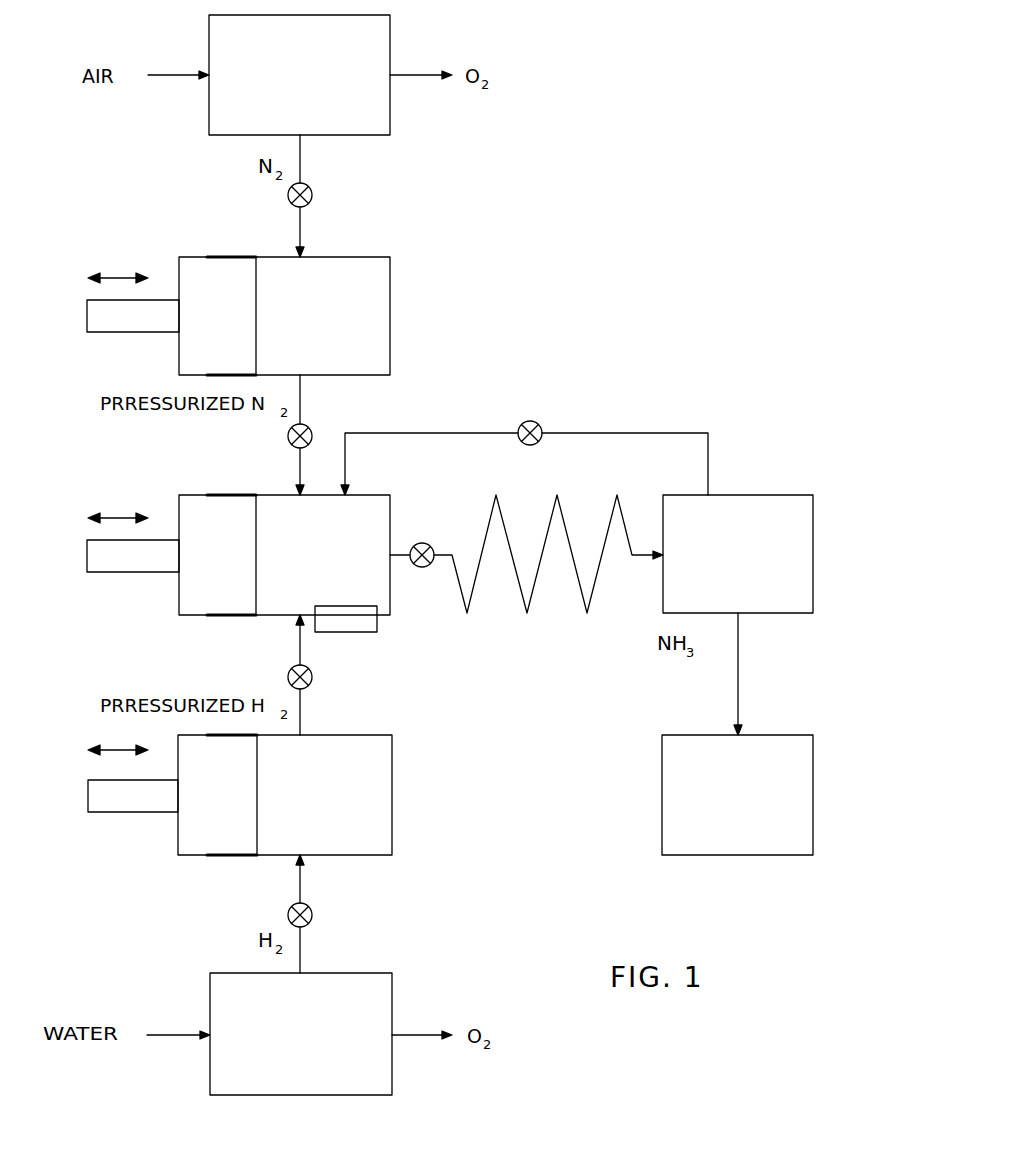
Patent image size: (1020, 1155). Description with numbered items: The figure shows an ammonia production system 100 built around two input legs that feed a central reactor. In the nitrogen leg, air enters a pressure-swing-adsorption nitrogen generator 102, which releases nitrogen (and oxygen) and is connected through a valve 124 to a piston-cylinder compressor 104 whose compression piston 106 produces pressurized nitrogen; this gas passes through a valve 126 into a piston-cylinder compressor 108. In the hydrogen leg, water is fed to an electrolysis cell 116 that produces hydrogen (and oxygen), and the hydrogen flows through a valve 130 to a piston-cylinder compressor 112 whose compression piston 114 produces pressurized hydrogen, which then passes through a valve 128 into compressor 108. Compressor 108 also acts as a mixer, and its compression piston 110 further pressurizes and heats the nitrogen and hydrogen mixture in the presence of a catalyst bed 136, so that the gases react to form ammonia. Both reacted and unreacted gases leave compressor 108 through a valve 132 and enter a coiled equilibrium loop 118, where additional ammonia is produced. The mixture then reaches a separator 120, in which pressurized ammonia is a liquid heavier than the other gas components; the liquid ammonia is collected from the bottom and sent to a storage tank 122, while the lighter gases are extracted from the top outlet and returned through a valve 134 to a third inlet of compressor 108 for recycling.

The ammonia production system 100 is at (642, 139).
The pressure-swing-adsorption (PSA) nitrogen generator 102 is at (360, 60).
The piston-cylinder compressor 104 is at (352, 272).
The compression piston 106 is at (193, 285).
The piston-cylinder compressor 108 is at (352, 508).
The compression piston 110 is at (195, 600).
The piston-cylinder compressor 112 is at (368, 820).
The compression piston 114 is at (195, 825).
The electrolysis cell 116 is at (360, 988).
The coiled equilibrium loop 118 is at (533, 590).
The separator 120 is at (758, 517).
The storage tank 122 is at (759, 763).
The valve 124 is at (310, 190).
The valve 126 is at (288, 440).
The valve 128 is at (290, 680).
The valve 130 is at (312, 908).
The valve 132 is at (427, 570).
The valve 134 is at (533, 421).
The catalyst bed 136 is at (348, 630).